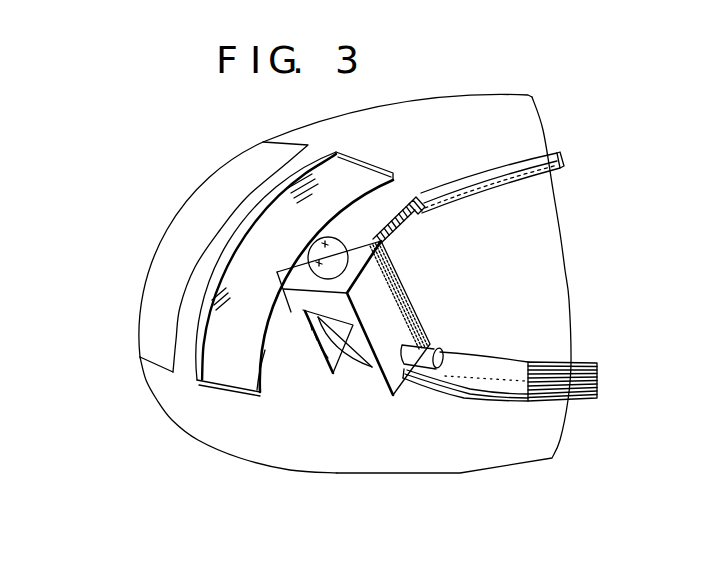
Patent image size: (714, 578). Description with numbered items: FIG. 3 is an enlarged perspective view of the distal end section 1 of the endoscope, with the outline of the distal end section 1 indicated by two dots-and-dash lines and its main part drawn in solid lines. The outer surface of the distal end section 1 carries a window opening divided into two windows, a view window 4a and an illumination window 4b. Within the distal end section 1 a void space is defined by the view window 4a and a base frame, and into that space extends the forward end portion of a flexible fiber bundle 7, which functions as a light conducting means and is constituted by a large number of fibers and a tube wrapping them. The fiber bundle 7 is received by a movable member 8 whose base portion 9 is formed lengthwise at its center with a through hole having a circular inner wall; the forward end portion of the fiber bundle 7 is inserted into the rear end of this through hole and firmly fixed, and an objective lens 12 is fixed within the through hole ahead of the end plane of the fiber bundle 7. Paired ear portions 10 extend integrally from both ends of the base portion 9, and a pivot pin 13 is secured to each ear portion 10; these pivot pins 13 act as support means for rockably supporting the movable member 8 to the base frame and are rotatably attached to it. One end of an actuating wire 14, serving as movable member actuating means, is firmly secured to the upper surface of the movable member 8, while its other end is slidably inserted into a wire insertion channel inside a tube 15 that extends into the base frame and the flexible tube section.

The distal end section 1 is at (350, 476).
The view window 4a is at (219, 375).
The illumination window 4b is at (142, 303).
The flexible fiber bundle 7 is at (475, 385).
The movable member 8 is at (422, 302).
The base portion 9 is at (337, 317).
The ear portions 10 is at (372, 367).
The objective lens 12 is at (327, 255).
The pivot pin 13 is at (418, 367).
The actuating wire 14 is at (396, 216).
The tube 15 is at (461, 187).